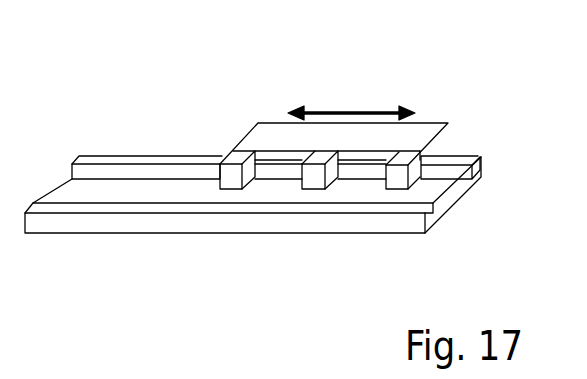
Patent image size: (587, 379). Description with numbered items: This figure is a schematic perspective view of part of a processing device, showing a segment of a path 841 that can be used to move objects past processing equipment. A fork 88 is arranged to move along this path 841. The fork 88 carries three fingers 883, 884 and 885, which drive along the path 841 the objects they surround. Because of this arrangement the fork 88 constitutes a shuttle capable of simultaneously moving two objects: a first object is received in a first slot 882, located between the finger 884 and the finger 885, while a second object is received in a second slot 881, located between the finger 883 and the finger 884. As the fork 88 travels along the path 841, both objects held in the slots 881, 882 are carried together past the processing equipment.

The path 841 is at (100, 228).
The finger 883 is at (231, 161).
The finger 885 is at (413, 172).
The fork 88 is at (287, 127).
The second slot 881 is at (270, 188).
The first slot 882 is at (350, 188).
The finger 884 is at (320, 127).